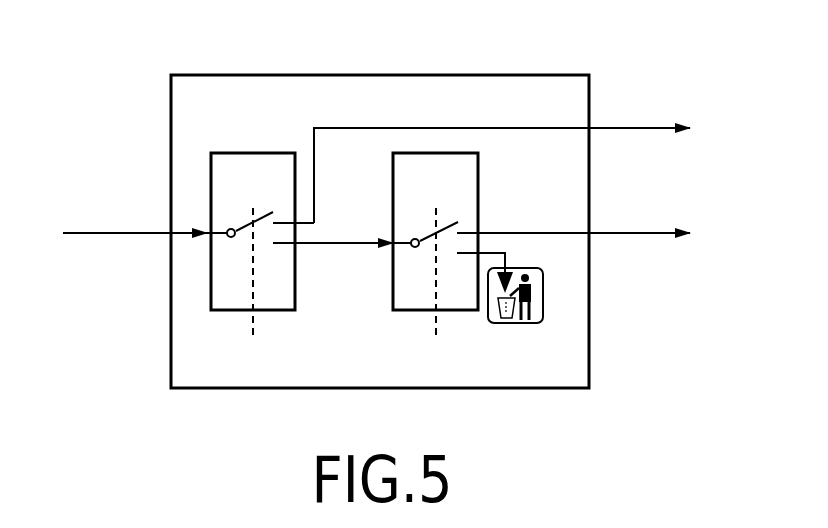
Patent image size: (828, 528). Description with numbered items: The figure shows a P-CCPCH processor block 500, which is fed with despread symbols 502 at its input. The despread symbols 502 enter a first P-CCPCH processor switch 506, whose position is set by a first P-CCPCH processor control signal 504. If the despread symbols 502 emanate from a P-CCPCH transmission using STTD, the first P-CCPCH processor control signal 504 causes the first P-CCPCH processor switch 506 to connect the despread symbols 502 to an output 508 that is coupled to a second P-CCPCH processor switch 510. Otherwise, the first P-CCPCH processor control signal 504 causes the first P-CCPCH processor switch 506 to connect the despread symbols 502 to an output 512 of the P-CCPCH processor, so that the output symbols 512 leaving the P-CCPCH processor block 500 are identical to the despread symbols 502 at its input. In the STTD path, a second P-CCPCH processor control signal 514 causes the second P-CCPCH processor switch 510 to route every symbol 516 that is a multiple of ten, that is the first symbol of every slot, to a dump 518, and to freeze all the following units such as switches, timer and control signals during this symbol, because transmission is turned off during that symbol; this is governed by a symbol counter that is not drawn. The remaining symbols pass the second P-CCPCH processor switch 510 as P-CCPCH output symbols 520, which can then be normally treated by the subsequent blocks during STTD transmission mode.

The P-CCPCH processor block 500 is at (187, 110).
The despread symbols 502 is at (145, 234).
The first P-CCPCH processor control signal 504 is at (253, 315).
The first P-CCPCH processor switch 506 is at (240, 310).
The output 508 is at (333, 243).
The second P-CCPCH processor switch 510 is at (420, 310).
The output of the P-CCPCH processor 512 is at (615, 128).
The second P-CCPCH processor control signal 514 is at (436, 318).
The symbol 516 is at (497, 237).
The dump 518 is at (515, 323).
The P-CCPCH output symbols 520 is at (615, 233).